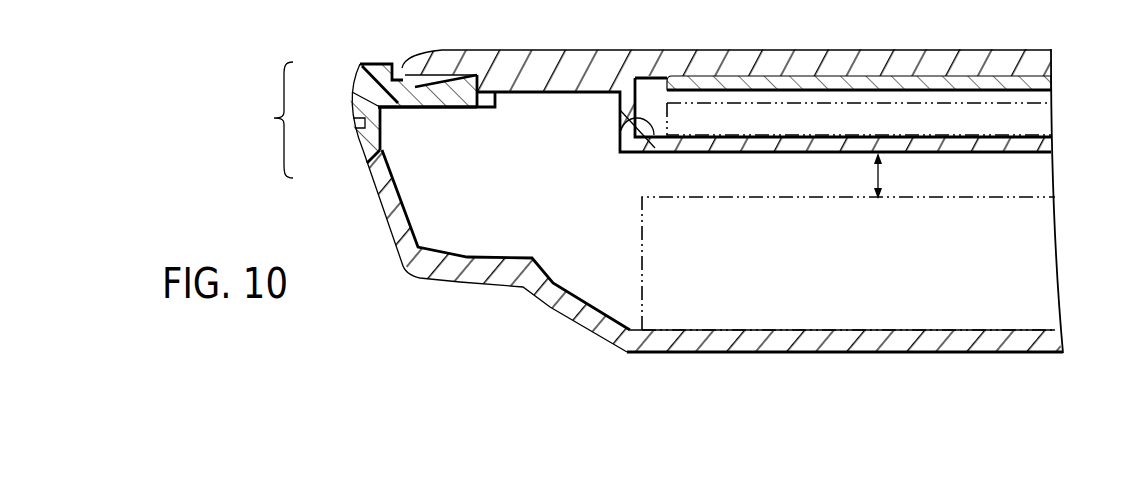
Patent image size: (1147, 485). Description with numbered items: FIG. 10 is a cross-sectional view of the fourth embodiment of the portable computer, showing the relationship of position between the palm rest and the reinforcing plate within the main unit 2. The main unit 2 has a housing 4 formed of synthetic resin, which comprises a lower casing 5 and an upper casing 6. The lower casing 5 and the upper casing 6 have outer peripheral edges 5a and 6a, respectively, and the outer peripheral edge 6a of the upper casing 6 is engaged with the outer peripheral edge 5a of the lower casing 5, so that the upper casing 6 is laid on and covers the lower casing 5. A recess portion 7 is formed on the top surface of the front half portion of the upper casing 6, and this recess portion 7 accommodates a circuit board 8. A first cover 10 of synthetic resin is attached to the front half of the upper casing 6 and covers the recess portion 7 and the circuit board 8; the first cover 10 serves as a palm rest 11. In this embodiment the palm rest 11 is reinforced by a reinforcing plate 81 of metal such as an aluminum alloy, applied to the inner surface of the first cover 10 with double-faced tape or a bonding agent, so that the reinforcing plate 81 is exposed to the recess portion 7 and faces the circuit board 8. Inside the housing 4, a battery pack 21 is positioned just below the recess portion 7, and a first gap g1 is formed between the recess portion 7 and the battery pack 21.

The main unit 2 is at (574, 335).
The housing 4 is at (308, 120).
The lower casing 5 is at (361, 162).
The outer peripheral edge 5a is at (385, 148).
The upper casing 6 is at (358, 86).
The outer peripheral edge 6a is at (383, 109).
The recess portion 7 is at (630, 118).
The circuit board 8 is at (1060, 116).
The reinforcing plate 81 is at (975, 82).
The first cover 10 is at (877, 60).
The palm rest 11 is at (678, 50).
The battery pack 21 is at (1038, 268).
The first gap g1 is at (883, 178).